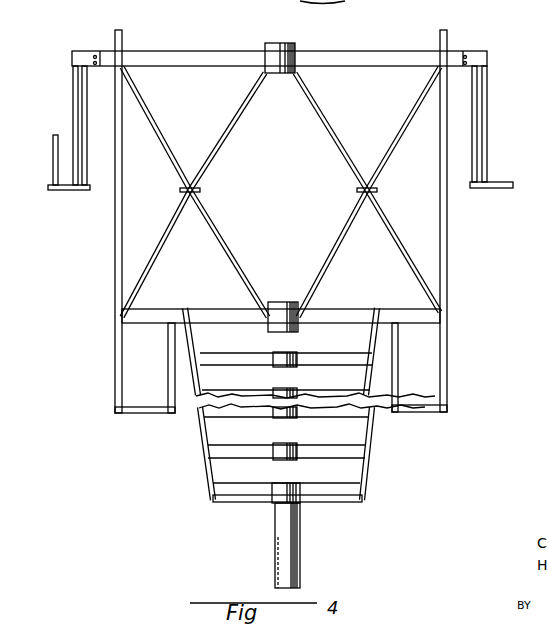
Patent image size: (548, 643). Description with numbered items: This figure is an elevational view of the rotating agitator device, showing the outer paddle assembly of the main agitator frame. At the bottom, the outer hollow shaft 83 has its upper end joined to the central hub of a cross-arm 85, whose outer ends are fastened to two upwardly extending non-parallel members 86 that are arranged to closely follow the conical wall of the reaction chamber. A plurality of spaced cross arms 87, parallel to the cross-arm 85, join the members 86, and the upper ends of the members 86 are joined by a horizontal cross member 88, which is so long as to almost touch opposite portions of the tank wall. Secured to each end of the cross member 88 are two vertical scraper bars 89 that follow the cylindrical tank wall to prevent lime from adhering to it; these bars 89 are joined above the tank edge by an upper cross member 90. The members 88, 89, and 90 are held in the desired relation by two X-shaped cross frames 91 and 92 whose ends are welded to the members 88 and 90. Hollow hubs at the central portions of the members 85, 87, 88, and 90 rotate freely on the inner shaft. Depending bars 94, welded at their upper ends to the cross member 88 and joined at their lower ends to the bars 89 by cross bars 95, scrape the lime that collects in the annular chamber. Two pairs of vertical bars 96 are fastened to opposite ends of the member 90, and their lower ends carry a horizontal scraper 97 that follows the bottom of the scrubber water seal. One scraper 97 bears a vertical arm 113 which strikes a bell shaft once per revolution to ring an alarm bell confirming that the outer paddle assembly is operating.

The outer hollow shaft 83 is at (300, 558).
The cross-arm 85 is at (260, 494).
The upwardly extending non-parallel members 86 is at (368, 472).
The spaced cross arms 87 is at (308, 450).
The horizontal cross member 88 is at (300, 305).
The vertical scraper bars 89 is at (115, 258).
The upper cross member 90 is at (389, 52).
The X-shaped cross frame 91 is at (204, 171).
The X-shaped cross frame 92 is at (350, 163).
The depending bars 94 is at (168, 390).
The cross bars 95 is at (155, 411).
The vertical bars 96 is at (85, 126).
The horizontal scraper 97 is at (76, 190).
The vertical arm 113 is at (53, 160).